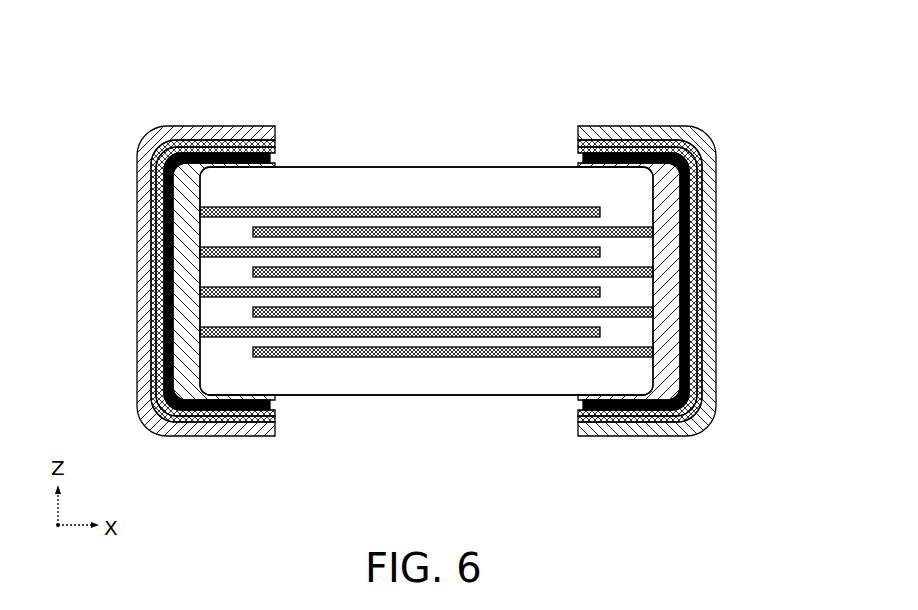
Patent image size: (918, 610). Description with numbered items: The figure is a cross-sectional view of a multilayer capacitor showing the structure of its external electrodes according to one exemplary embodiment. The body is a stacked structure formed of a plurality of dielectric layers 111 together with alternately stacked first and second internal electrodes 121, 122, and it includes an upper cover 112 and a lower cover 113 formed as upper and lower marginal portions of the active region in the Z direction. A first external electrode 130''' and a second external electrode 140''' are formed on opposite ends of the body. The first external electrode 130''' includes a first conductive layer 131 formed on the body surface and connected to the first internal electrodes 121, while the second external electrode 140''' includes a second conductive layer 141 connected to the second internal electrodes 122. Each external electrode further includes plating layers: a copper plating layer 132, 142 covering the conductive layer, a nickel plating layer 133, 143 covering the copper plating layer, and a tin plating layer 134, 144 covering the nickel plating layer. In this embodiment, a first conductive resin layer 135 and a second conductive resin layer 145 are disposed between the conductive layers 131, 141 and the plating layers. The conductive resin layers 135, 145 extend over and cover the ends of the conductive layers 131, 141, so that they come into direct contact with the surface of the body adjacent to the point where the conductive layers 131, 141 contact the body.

The dielectric layer 111 is at (633, 217).
The upper cover 112 is at (425, 178).
The lower cover 113 is at (353, 380).
The first internal electrode 121 is at (340, 207).
The second internal electrode 122 is at (511, 227).
The first external electrode 130''' is at (170, 256).
The first conductive layer 131 is at (183, 210).
The copper plating layer 132 is at (157, 255).
The nickel plating layer 133 is at (147, 305).
The tin plating layer 134 is at (142, 353).
The first conductive resin layer 135 is at (223, 433).
The second external electrode 140''' is at (686, 255).
The second conductive layer 141 is at (667, 192).
The copper plating layer 142 is at (695, 280).
The nickel plating layer 143 is at (690, 330).
The tin plating layer 144 is at (708, 377).
The second conductive resin layer 145 is at (631, 430).